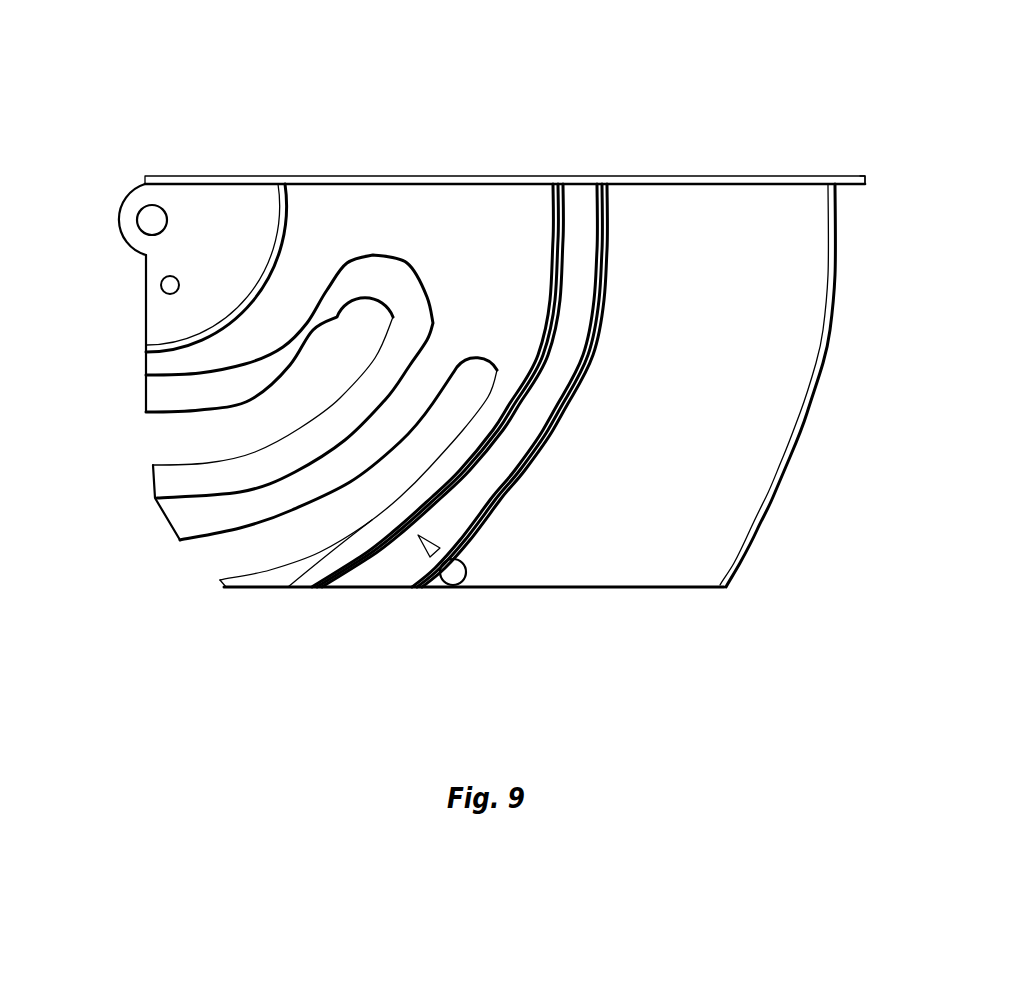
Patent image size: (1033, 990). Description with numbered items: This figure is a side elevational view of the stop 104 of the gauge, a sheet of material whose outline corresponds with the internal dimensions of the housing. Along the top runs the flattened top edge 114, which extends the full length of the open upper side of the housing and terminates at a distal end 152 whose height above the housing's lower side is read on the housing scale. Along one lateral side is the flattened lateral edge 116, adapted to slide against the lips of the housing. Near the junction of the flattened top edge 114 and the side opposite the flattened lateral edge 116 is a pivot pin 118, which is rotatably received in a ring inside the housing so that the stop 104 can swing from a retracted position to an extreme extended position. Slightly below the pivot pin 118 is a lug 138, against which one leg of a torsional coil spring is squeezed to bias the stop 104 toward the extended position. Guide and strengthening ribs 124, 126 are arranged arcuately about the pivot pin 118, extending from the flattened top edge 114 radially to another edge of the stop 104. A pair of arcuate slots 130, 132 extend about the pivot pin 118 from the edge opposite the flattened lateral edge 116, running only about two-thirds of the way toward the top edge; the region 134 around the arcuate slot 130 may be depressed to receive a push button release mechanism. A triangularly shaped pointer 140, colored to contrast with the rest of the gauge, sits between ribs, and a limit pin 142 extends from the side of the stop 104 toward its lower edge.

The stop 104 is at (620, 169).
The flattened top edge 114 is at (413, 175).
The flattened lateral edge 116 is at (818, 386).
The pivot pin 118 is at (139, 209).
The guide and strengthening rib 124 is at (292, 212).
The guide and strengthening rib 126 is at (553, 210).
The arcuate slot 130 is at (170, 441).
The arcuate slot 132 is at (212, 559).
The region around the arcuate slot 134 is at (152, 398).
The lug 138 is at (161, 284).
The pointer 140 is at (422, 549).
The limit pin 142 is at (462, 584).
The distal end of the flattened top edge 152 is at (866, 177).